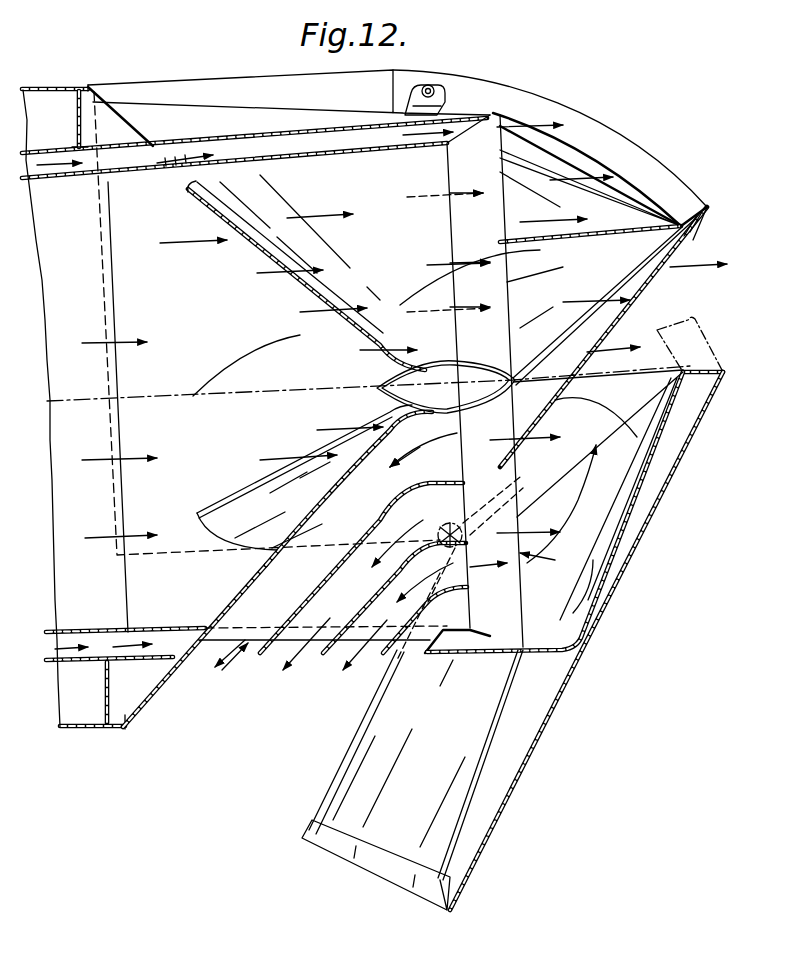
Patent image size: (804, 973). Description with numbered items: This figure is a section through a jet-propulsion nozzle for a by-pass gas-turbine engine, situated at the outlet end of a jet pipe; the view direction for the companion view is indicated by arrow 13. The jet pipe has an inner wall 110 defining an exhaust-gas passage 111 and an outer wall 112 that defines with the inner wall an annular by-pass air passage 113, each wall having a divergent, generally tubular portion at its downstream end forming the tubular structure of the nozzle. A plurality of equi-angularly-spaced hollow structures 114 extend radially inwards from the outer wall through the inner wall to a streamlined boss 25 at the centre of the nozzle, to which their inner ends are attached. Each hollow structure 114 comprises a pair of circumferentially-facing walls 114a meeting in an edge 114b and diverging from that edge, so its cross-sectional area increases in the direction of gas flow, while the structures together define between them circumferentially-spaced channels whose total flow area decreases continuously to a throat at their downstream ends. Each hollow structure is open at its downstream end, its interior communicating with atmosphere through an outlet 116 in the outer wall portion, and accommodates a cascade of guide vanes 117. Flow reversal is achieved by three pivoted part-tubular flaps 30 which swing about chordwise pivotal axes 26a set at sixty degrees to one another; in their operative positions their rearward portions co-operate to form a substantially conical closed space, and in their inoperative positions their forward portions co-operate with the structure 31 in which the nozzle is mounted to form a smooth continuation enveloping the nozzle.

The arrow 13 is at (703, 238).
The streamlined boss 25 is at (392, 410).
The pivotal axes 26a is at (446, 525).
The part-tubular flap 30 is at (620, 141).
The structure 31 is at (50, 84).
The inner wall 110 is at (87, 180).
The exhaust-gas passage 111 is at (70, 315).
The outer wall 112 is at (97, 660).
The by-pass air passage 113 is at (62, 643).
The hollow structure 114 is at (300, 337).
The circumferentially-facing walls 114a is at (272, 553).
The edge 114b is at (236, 600).
The outlet 116 is at (338, 597).
The guide vanes 117 is at (405, 620).